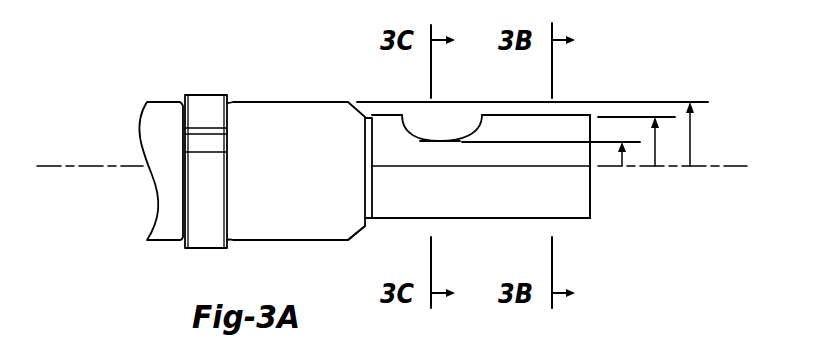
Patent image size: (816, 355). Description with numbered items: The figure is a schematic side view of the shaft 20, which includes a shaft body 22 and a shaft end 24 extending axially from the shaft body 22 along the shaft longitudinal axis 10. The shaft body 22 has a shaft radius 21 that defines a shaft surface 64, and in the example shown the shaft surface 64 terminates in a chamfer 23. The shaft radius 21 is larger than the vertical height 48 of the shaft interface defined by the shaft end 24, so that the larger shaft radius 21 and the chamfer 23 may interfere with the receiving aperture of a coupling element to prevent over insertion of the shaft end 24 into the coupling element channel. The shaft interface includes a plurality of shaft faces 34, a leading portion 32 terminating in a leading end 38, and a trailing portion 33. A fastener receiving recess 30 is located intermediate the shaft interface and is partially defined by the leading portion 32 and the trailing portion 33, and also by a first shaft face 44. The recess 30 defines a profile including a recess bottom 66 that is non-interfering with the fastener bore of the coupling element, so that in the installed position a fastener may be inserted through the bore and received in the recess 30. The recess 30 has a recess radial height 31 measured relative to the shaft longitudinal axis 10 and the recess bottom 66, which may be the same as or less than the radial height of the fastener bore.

The shaft longitudinal axis 10 is at (80, 168).
The shaft 20 is at (90, 114).
The shaft radius 21 is at (691, 158).
The shaft body 22 is at (314, 72).
The chamfer 23 is at (357, 233).
The shaft end 24 is at (582, 234).
The fastener receiving recess 30 is at (444, 114).
The recess radial height 31 is at (623, 158).
The leading portion 32 is at (578, 82).
The trailing portion 33 is at (378, 80).
The shaft faces 34 is at (478, 205).
The leading end 38 is at (593, 110).
The first shaft face 44 is at (518, 128).
The vertical height 48 is at (656, 158).
The shaft surface 64 is at (255, 113).
The recess bottom 66 is at (438, 140).